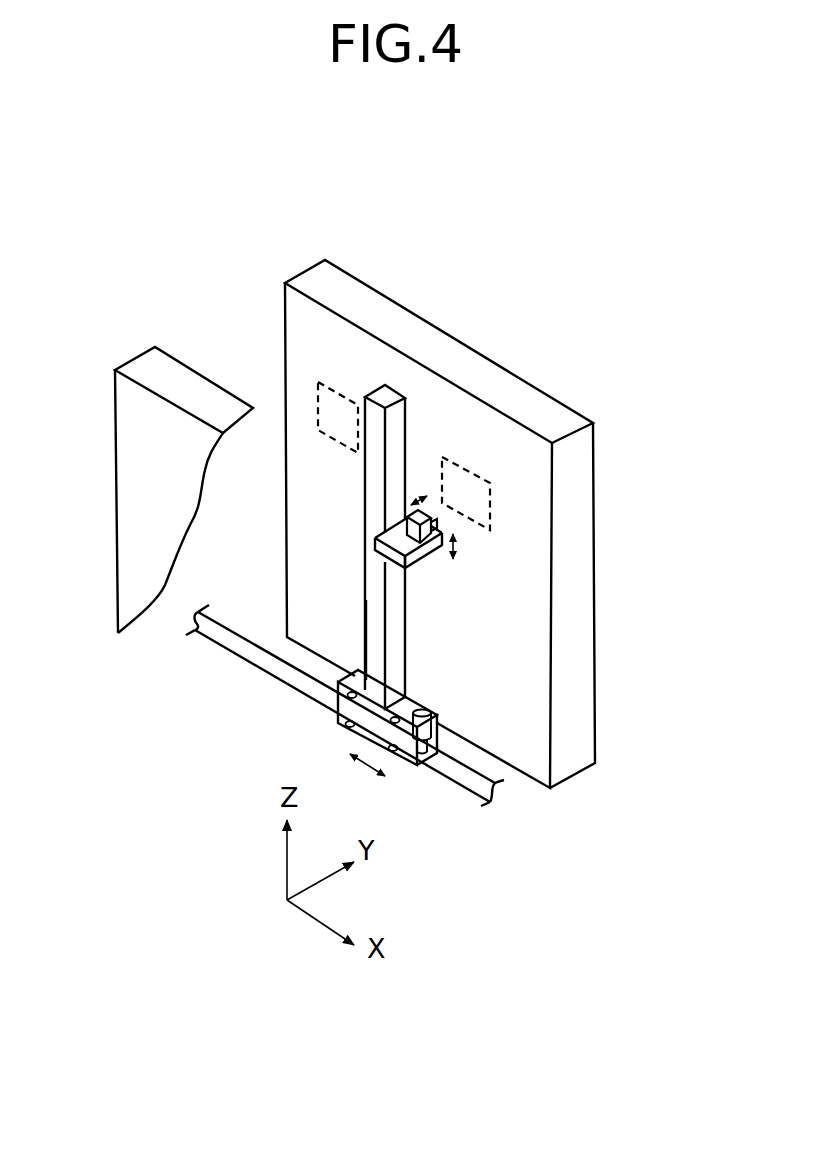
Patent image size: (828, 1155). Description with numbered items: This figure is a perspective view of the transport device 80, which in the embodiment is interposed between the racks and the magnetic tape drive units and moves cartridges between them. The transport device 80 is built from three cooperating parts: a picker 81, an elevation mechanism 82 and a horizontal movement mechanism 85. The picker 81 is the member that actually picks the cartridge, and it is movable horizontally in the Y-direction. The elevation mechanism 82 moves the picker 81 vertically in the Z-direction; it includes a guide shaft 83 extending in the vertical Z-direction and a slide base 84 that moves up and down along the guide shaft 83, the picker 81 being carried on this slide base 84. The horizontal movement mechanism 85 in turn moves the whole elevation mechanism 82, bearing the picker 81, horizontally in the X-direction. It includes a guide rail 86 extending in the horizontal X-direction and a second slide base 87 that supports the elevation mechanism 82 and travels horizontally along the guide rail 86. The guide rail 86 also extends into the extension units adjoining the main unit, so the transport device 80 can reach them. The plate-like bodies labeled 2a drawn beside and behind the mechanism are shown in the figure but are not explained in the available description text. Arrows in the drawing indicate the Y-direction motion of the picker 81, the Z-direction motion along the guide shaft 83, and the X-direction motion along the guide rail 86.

The pallet (workpiece carrier) 2a is at (337, 278).
The transport device 80 is at (278, 724).
The picker 81 is at (436, 517).
The elevation mechanism 82 is at (395, 390).
The guide shaft 83 is at (400, 628).
The slide base 84 is at (428, 557).
The horizontal movement mechanism 85 is at (272, 678).
The guide rail 86 is at (467, 790).
The slide base 87 is at (400, 764).